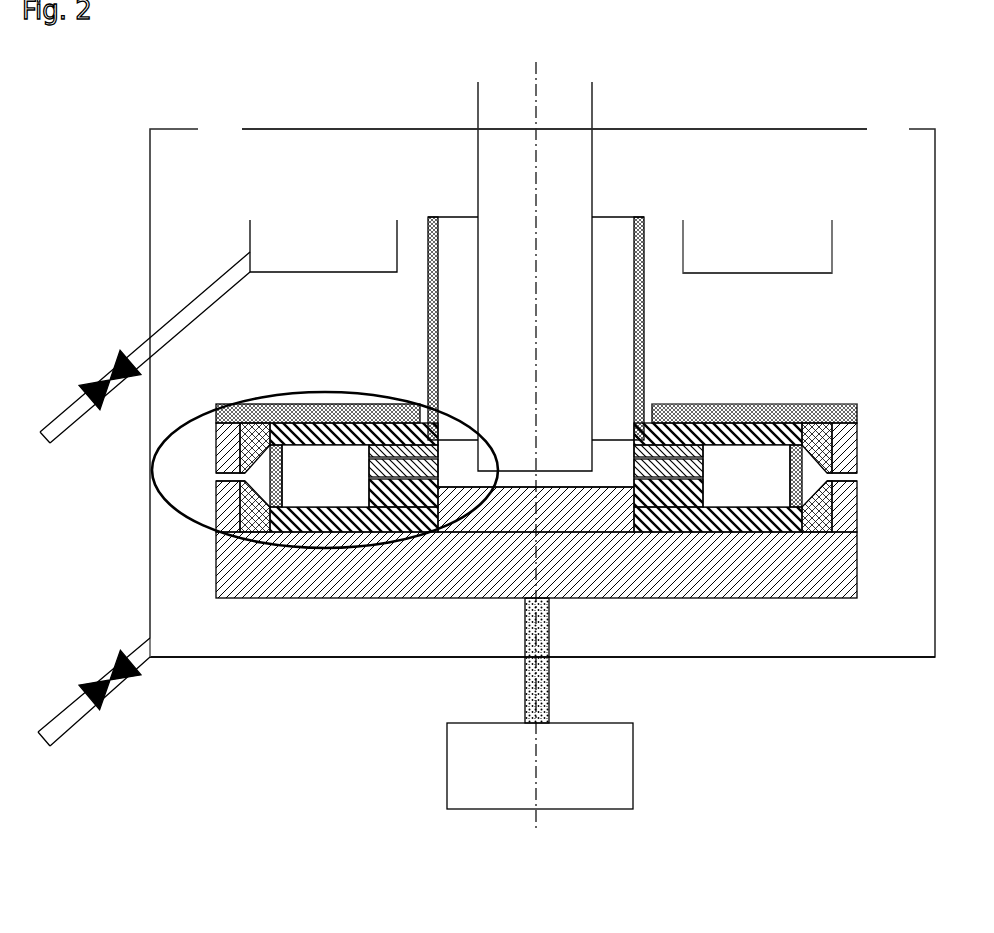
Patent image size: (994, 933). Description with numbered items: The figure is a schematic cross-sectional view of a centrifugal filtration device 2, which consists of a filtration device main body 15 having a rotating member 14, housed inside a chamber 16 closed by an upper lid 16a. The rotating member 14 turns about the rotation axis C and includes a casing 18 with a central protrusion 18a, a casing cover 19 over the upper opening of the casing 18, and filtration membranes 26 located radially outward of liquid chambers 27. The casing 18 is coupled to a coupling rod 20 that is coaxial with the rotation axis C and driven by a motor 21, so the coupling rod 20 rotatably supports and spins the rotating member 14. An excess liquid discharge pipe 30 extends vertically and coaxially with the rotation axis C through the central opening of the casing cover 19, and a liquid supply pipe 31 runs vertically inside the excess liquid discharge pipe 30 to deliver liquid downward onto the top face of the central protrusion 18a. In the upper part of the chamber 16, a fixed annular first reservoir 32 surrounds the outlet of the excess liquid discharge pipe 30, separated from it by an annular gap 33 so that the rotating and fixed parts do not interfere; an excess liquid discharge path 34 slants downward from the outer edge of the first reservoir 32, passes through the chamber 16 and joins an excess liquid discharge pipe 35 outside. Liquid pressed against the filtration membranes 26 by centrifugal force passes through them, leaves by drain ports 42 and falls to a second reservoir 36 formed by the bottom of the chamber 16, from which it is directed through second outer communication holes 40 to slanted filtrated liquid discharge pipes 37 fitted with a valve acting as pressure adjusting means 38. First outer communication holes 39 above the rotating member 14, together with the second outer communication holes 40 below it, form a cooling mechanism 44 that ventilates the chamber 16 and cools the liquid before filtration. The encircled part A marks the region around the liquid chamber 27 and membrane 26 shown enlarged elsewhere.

The centrifugal filtration device 2 is at (641, 122).
The rotating member 14 is at (807, 389).
The filtration device main body 15 is at (873, 246).
The chamber 16 is at (150, 208).
The upper lid 16a is at (366, 130).
The casing 18 is at (216, 563).
The central protrusion 18a is at (596, 487).
The casing cover 19 is at (343, 412).
The coupling rod 20 is at (525, 688).
The motor 21 is at (447, 757).
The filtration membrane 26 is at (243, 472).
The liquid chamber 27 is at (339, 490).
The excess liquid discharge pipe 30 is at (428, 292).
The liquid supply pipe 31 is at (478, 164).
The first reservoir 32 is at (250, 241).
The annular gap 33 is at (663, 228).
The excess liquid discharge path 34 is at (195, 307).
The excess liquid discharge pipe 35 is at (66, 406).
The second reservoir 36 is at (282, 648).
The filtrated liquid discharge pipe 37 is at (63, 708).
The pressure adjusting means 38 is at (102, 668).
The first outer communication holes 39 is at (212, 132).
The second outer communication holes 40 is at (153, 649).
The drain port 42 is at (217, 480).
The cooling mechanism 44 is at (529, 391).
The part A is at (146, 478).
The rotation axis C is at (535, 103).